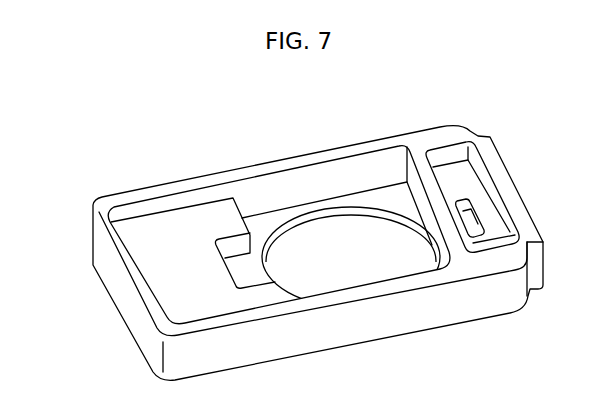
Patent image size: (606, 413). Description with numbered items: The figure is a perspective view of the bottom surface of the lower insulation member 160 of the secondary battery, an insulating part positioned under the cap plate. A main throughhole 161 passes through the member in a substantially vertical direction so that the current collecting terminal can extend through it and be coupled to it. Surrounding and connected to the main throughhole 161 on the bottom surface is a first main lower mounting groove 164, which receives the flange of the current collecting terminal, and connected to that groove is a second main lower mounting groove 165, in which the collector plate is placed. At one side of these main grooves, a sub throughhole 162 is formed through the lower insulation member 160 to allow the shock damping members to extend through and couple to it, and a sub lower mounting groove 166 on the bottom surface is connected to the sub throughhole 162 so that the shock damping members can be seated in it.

The lower insulation member 160 is at (165, 177).
The main throughhole 161 is at (348, 233).
The sub throughhole 162 is at (468, 232).
The first main lower mounting groove 164 is at (270, 218).
The second main lower mounting groove 165 is at (162, 263).
The sub lower mounting groove 166 is at (467, 187).